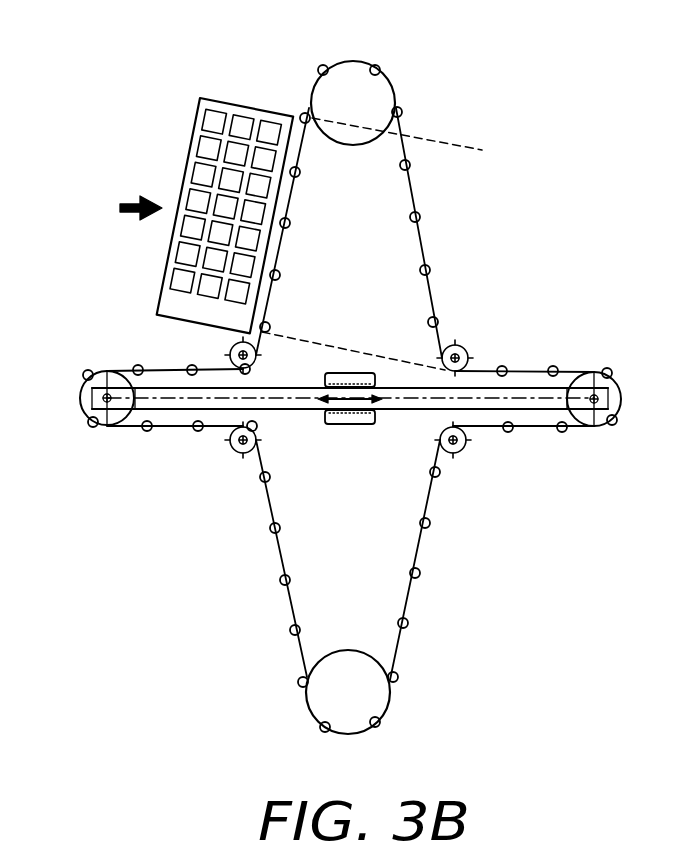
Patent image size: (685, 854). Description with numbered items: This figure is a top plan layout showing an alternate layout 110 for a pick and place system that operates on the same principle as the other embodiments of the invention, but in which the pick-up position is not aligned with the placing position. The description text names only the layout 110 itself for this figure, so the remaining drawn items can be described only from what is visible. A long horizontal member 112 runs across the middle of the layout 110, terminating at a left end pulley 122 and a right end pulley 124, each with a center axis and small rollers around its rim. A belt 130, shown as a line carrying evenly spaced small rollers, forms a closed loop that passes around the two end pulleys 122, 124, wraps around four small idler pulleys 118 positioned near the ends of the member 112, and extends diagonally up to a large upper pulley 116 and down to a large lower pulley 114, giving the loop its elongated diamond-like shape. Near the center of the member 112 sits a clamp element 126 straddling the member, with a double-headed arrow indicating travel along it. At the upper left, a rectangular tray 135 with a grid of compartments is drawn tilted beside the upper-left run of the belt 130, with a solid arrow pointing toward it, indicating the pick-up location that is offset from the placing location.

The alternate layout 110 is at (445, 123).
The support bar 112 is at (525, 410).
The lower drive pulley 114 is at (380, 700).
The upper drive pulley 116 is at (378, 90).
The idler pulleys 118 is at (230, 350).
The left end pulley 122 is at (80, 408).
The right end pulley 124 is at (622, 388).
The clamp 126 is at (350, 428).
The belt 130 is at (280, 274).
The circuit board 135 is at (250, 106).